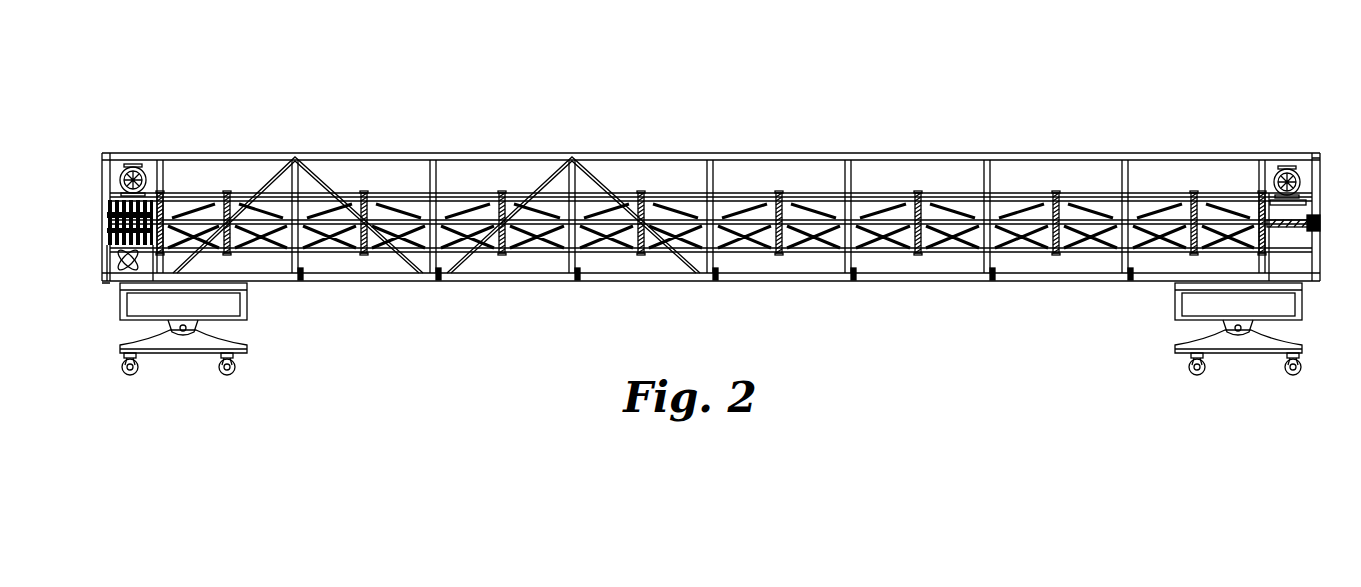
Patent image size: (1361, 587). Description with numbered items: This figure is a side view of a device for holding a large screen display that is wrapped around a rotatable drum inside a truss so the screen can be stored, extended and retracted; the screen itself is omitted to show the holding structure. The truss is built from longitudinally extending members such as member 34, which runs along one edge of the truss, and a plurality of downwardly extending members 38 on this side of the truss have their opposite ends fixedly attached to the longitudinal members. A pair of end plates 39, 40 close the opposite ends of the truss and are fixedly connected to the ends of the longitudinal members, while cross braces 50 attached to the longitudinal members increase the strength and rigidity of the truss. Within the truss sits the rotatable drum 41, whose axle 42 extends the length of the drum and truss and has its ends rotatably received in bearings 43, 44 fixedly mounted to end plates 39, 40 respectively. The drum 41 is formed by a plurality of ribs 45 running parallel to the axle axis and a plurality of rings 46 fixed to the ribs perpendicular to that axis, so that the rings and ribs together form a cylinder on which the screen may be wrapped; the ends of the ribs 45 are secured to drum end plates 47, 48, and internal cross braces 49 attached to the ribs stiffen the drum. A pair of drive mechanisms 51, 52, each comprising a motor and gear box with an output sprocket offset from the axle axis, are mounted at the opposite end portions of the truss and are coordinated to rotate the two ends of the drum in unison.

The longitudinally extending member 34 is at (500, 153).
The downwardly extending member 38 is at (707, 175).
The end plate 39 is at (104, 162).
The end plate 40 is at (1318, 180).
The rotatable drum 41 is at (445, 194).
The axle 42 is at (1292, 283).
The bearing 43 is at (105, 222).
The bearing 44 is at (1316, 225).
The rib 45 is at (338, 194).
The ring 46 is at (228, 192).
The end plate 47 is at (172, 192).
The end plate 48 is at (1258, 210).
The cross brace 49 is at (270, 210).
The cross brace 50 is at (605, 165).
The drive mechanism 51 is at (137, 168).
The drive mechanism 52 is at (1287, 170).